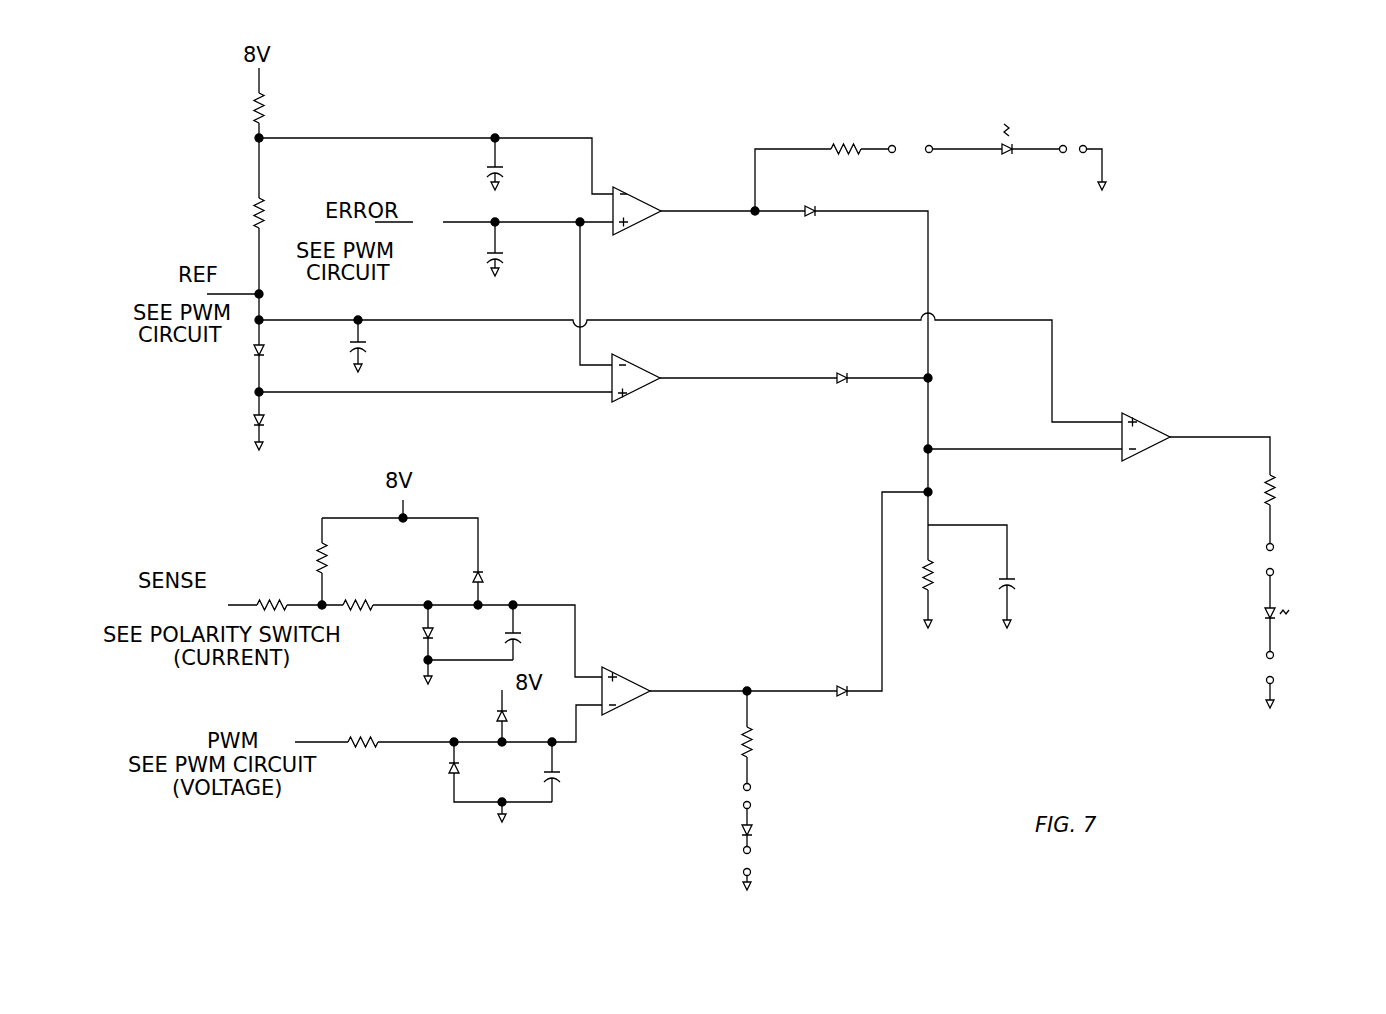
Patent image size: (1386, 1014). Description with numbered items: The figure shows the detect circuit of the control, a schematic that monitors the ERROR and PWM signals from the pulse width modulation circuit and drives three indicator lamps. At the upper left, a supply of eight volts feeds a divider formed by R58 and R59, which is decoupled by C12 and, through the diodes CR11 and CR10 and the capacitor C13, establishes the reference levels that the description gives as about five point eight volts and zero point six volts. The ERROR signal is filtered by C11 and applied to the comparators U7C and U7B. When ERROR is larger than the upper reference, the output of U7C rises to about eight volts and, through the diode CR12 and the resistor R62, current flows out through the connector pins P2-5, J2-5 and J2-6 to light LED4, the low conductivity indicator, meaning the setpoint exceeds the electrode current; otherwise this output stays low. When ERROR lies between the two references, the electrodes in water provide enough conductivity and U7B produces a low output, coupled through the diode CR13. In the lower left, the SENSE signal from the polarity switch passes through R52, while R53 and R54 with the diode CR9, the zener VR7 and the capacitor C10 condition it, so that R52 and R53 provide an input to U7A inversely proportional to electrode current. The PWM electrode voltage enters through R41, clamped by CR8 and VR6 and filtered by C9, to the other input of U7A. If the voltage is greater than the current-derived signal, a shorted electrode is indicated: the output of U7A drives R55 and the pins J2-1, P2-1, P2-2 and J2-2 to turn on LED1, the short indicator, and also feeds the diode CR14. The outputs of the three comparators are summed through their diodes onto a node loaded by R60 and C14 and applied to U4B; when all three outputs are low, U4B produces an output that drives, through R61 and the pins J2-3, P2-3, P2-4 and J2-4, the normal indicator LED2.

The resistor 470 R58 is at (310, 108).
The resistor 1K R59 is at (286, 205).
The capacitor 22 C12 is at (522, 165).
The capacitor C11 is at (519, 254).
The comparator U7C is at (646, 257).
The resistor 330 R62 is at (832, 136).
The diode CR12 is at (814, 225).
The connector pin P2-5 is at (996, 149).
The connector pin J2-5 is at (962, 136).
The low conductivity LED LED4 is at (963, 166).
The connector pin J2-6 is at (1039, 165).
The diode CR11 is at (295, 350).
The diode CR10 is at (297, 425).
The capacitor 22 C13 is at (390, 351).
The comparator U7B is at (641, 432).
The diode CR13 is at (848, 364).
The output amplifier U4B is at (1140, 506).
The resistor 330 R61 is at (1296, 505).
The connector pin J2-3 is at (1293, 546).
The connector pin P2-3 is at (1296, 583).
The normal LED LED2 is at (1325, 625).
The connector pin P2-4 is at (1297, 660).
The connector pin J2-4 is at (1293, 690).
The resistor 51K R60 is at (954, 576).
The capacitor .01 C14 is at (1035, 593).
The resistor R52 is at (266, 578).
The resistor R53 is at (378, 556).
The resistor 51K R54 is at (382, 590).
The diode CR9 is at (509, 578).
The zener diode VR7 is at (468, 644).
The capacitor .1 C10 is at (537, 632).
The comparator U7A is at (626, 744).
The resistor 51K R41 is at (368, 726).
The diode CR8 is at (528, 716).
The zener diode VR6 is at (500, 782).
The capacitor .1 C9 is at (572, 774).
The diode CR14 is at (824, 677).
The resistor 330 R55 is at (773, 737).
The connector pin J2-1 is at (774, 788).
The connector pin P2-1 is at (777, 813).
The short LED LED1 is at (834, 840).
The connector pin P2-2 is at (716, 848).
The connector pin J2-2 is at (718, 877).